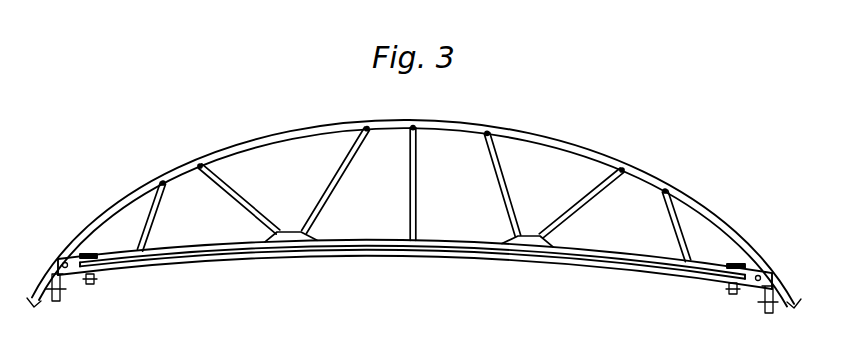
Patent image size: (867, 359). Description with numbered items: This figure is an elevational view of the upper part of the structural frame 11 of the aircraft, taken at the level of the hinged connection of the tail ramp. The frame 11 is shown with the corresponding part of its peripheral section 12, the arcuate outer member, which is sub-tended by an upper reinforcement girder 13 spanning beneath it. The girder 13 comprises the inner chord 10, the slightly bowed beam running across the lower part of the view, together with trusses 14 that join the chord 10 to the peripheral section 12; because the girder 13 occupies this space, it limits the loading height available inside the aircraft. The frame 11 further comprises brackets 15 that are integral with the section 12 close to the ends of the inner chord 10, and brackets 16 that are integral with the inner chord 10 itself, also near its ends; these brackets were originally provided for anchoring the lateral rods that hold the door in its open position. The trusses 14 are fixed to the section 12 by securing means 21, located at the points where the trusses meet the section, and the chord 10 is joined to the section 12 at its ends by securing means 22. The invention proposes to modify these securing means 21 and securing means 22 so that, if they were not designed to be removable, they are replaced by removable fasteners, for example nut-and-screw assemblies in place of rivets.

The inner chord 10 is at (415, 263).
The frame 11 is at (272, 122).
The peripheral section 12 is at (566, 142).
The upper reinforcement girder 13 is at (470, 222).
The trusses 14 is at (340, 184).
The brackets 15 is at (57, 303).
The brackets 16 is at (93, 286).
The securing means 21 is at (160, 179).
The securing means 22 is at (63, 262).